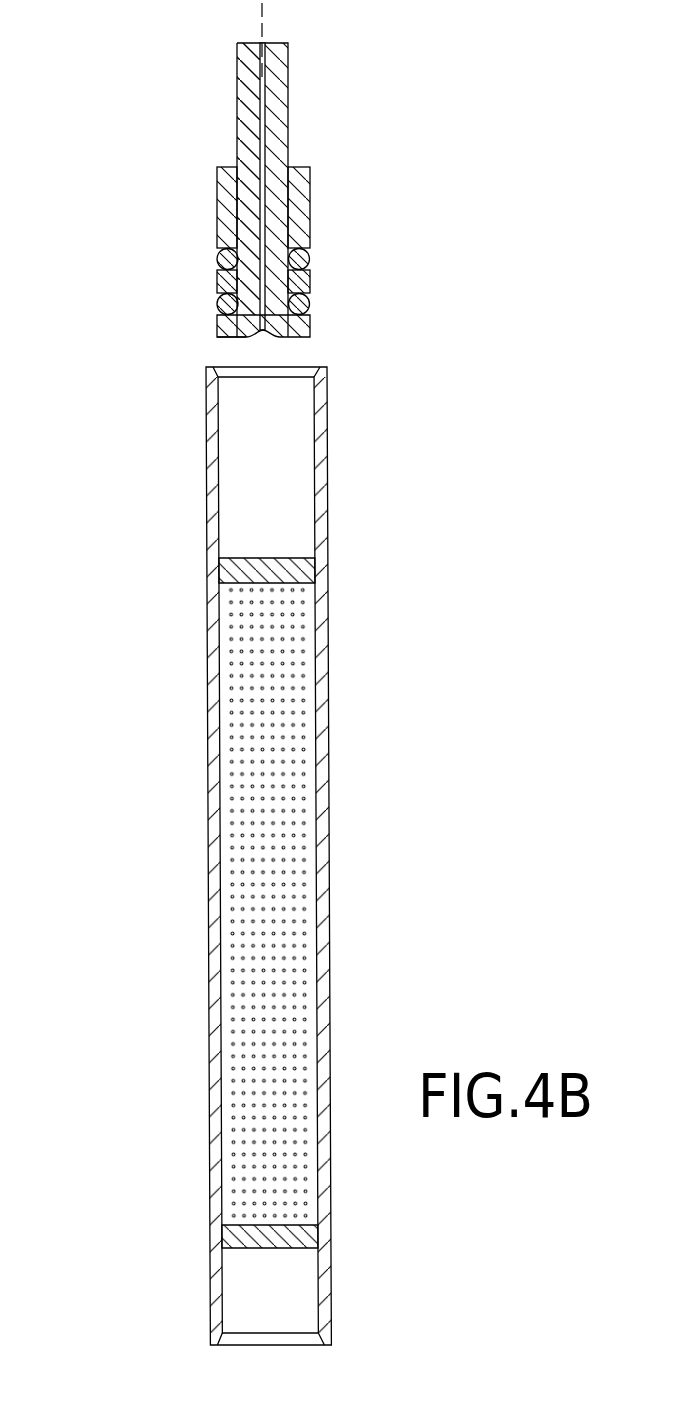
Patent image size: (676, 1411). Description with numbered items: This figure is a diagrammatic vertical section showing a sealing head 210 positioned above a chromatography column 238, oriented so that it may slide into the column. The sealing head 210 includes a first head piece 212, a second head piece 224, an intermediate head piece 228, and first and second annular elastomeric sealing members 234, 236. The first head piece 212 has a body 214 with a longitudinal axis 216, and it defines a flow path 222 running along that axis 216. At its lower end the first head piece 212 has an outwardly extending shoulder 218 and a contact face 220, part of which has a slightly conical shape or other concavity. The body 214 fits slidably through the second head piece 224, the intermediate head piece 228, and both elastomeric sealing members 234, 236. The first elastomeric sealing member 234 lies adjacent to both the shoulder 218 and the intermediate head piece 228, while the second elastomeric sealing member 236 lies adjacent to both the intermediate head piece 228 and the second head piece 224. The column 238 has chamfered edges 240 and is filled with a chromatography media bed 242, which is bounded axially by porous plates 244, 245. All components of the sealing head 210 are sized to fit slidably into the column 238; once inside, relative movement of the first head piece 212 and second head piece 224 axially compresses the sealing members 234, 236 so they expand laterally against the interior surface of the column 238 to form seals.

The sealing head 210 is at (162, 104).
The first head piece 212 is at (271, 188).
The body 214 is at (243, 97).
The longitudinal axis 216 is at (250, 16).
The outwardly extending shoulder 218 is at (227, 325).
The contact face 220 is at (223, 337).
The flow path 222 is at (264, 43).
The second head piece 224 is at (302, 198).
The intermediate head piece 228 is at (310, 278).
The first annular elastomeric sealing member 234 is at (310, 303).
The second annular elastomeric sealing member 236 is at (219, 260).
The column 238 is at (328, 642).
The chamfered edges 240 is at (197, 364).
The chromatography media bed 242 is at (302, 798).
The porous plate 244 is at (285, 558).
The porous plate 245 is at (290, 1250).